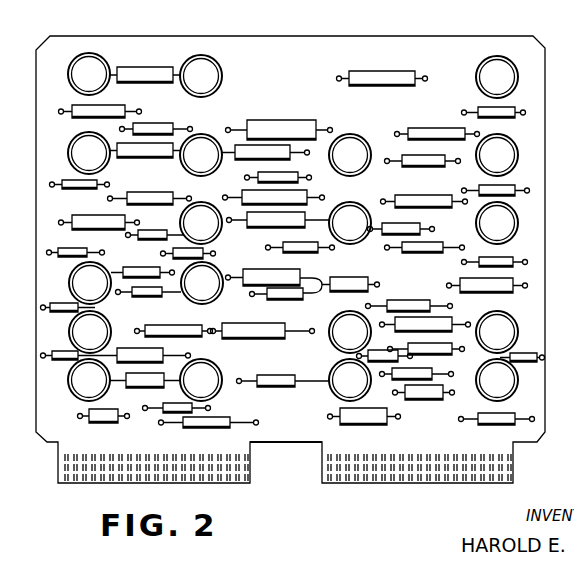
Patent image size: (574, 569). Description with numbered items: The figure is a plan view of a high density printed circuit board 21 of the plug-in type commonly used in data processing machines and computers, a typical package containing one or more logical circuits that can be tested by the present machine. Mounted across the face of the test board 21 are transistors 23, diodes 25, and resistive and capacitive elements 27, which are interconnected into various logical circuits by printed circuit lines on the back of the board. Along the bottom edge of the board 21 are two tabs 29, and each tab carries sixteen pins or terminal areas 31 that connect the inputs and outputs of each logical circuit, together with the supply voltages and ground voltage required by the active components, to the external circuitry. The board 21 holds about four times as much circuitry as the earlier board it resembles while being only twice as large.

The printed circuit board 21 is at (538, 159).
The transistors 23 is at (357, 148).
The diodes 25 is at (282, 300).
The resistive and capacitive elements 27 is at (473, 280).
The tabs 29 is at (62, 450).
The pins or terminal areas 31 is at (250, 466).